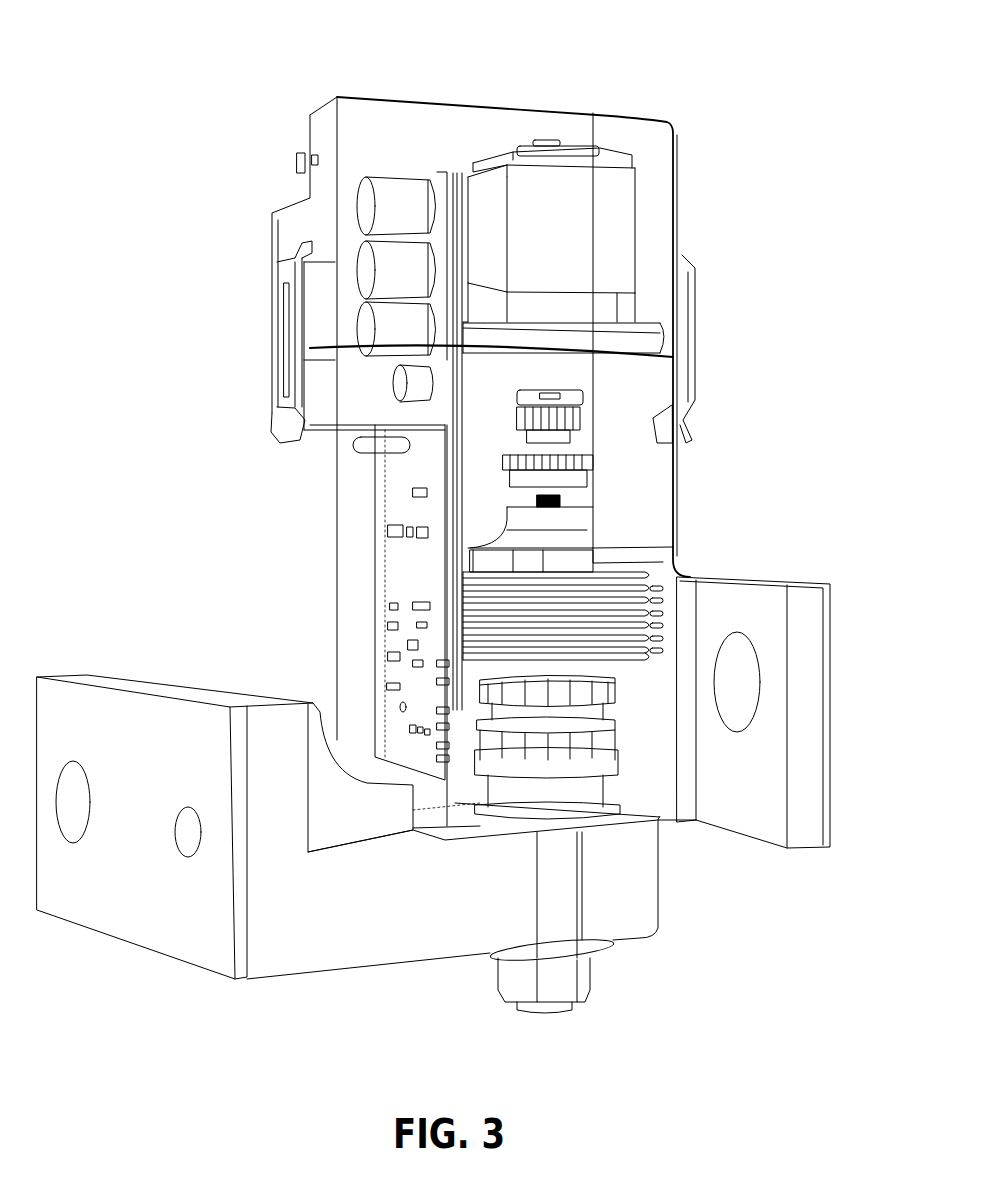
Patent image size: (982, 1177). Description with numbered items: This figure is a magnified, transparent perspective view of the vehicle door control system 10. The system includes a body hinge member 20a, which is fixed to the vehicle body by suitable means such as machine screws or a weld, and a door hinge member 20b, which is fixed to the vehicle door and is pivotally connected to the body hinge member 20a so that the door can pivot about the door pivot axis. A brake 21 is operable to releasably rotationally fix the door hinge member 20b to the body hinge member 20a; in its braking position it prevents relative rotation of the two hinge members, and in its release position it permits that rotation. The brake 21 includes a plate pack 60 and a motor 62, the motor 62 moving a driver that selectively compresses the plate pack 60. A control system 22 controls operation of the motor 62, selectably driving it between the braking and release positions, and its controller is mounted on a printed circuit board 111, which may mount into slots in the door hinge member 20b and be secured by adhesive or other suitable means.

The door control system 10 is at (256, 71).
The brake 21 is at (647, 514).
The motor 62 is at (622, 213).
The control system 22 is at (415, 582).
The printed circuit board 111 is at (418, 682).
The body hinge member 20a is at (142, 686).
The door hinge member 20b is at (743, 578).
The plate pack 60 is at (652, 673).